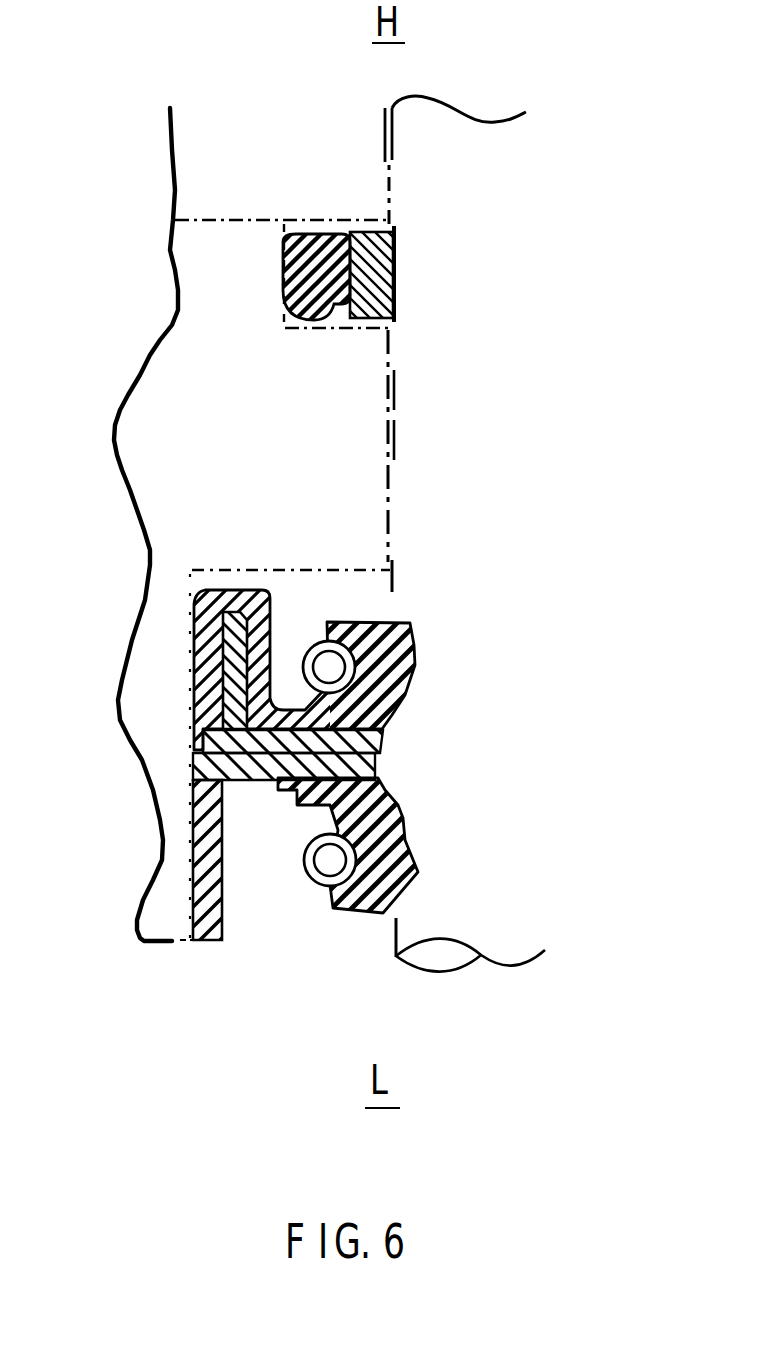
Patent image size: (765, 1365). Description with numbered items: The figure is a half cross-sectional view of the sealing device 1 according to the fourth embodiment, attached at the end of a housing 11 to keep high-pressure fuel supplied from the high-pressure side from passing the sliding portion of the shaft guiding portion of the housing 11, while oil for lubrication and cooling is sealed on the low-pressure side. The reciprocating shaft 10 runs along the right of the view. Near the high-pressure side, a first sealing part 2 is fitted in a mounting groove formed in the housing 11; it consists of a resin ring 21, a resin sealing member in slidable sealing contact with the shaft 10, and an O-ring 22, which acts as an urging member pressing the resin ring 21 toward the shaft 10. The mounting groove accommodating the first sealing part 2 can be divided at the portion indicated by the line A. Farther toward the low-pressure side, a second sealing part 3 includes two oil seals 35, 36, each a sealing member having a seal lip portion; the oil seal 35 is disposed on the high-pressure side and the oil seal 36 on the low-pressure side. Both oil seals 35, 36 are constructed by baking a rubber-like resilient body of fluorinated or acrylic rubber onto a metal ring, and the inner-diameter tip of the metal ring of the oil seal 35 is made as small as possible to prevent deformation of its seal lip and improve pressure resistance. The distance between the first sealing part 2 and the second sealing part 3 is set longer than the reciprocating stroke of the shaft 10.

The sealing device 1 is at (218, 457).
The first sealing part 2 is at (295, 280).
The second sealing part 3 is at (298, 765).
The shaft 10 is at (430, 490).
The housing 11 is at (272, 138).
The line A is at (216, 220).
The resin ring 21 is at (394, 271).
The O-ring 22 is at (284, 278).
The oil seal 35 is at (410, 667).
The oil seal 36 is at (393, 808).